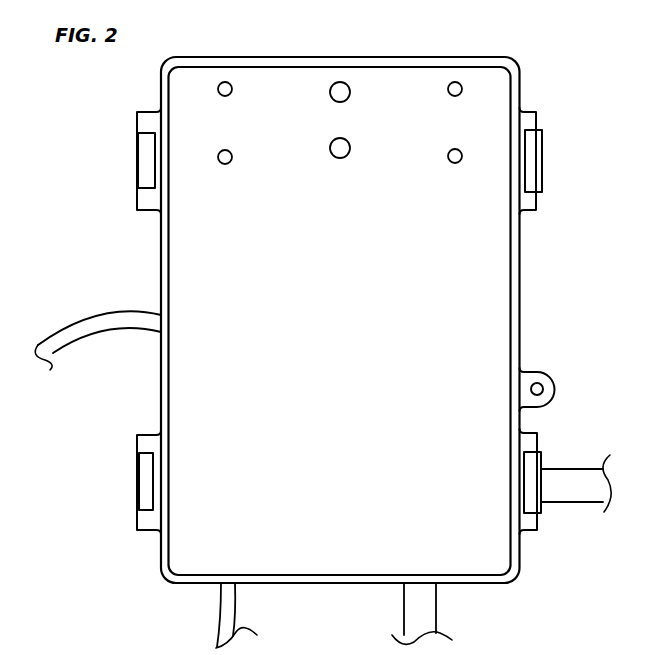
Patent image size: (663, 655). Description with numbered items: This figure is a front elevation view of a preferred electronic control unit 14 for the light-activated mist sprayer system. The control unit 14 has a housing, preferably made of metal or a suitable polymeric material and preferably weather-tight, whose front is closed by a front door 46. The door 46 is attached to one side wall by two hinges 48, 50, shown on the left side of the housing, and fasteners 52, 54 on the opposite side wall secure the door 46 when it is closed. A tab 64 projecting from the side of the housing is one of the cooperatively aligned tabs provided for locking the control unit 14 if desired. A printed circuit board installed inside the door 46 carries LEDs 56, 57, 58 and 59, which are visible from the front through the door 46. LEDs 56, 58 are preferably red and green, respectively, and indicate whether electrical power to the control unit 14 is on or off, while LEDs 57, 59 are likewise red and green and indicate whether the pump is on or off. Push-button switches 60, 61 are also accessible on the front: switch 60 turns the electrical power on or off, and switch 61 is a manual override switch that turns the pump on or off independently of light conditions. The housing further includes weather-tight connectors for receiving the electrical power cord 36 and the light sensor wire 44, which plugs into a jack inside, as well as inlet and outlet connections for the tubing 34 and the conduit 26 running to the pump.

The electronic control unit 14 is at (536, 86).
The conduit 26 is at (565, 476).
The tubing 34 is at (412, 620).
The electrical power cord 36 is at (238, 630).
The light sensor wire 44 is at (102, 318).
The front door 46 is at (492, 263).
The hinge 48 is at (145, 160).
The hinge 50 is at (145, 473).
The fastener 52 is at (537, 163).
The fastener 54 is at (535, 487).
The LED 56 is at (227, 97).
The LED 57 is at (458, 97).
The LED 58 is at (227, 165).
The LED 59 is at (458, 164).
The switch 60 is at (343, 159).
The switch 61 is at (343, 103).
The tab 64 is at (546, 378).